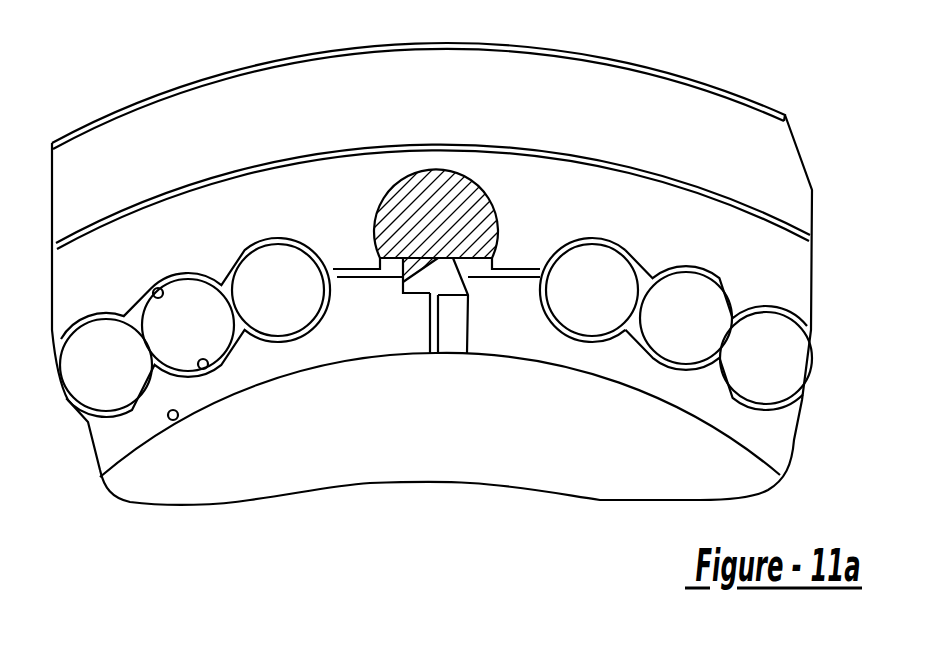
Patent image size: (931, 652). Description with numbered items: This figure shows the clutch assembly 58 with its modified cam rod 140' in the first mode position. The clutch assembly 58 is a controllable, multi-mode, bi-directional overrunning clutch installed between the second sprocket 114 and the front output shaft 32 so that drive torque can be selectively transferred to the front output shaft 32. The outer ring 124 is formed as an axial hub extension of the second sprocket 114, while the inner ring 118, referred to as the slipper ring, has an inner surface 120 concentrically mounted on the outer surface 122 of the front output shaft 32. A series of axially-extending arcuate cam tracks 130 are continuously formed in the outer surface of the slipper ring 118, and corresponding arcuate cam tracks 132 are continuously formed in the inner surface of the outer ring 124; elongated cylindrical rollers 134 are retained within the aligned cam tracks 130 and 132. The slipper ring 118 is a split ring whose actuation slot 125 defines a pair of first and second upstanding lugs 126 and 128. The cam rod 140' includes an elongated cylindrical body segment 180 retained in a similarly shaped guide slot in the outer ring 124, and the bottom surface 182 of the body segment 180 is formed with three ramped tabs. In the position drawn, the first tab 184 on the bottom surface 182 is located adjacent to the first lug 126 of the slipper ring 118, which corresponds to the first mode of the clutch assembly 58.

The clutch assembly 58 is at (633, 97).
The second sprocket 114 is at (188, 128).
The outer ring 124 is at (160, 225).
The elongated cylindrical rollers 134 is at (195, 300).
The arcuate cam tracks 132 is at (152, 292).
The arcuate cam tracks 130 is at (205, 369).
The outer surface 122 is at (172, 420).
The inner surface 120 is at (285, 378).
The inner ring 118 is at (660, 380).
The front output shaft 32 is at (535, 472).
The first upstanding lug 126 is at (358, 302).
The second upstanding lug 128 is at (503, 292).
The elongated cylindrical body segment 180 is at (403, 200).
The modified cam rod 140' is at (436, 190).
The first tab 184 is at (413, 294).
The bottom surface 182 is at (467, 330).
The actuation slot 125 is at (436, 353).